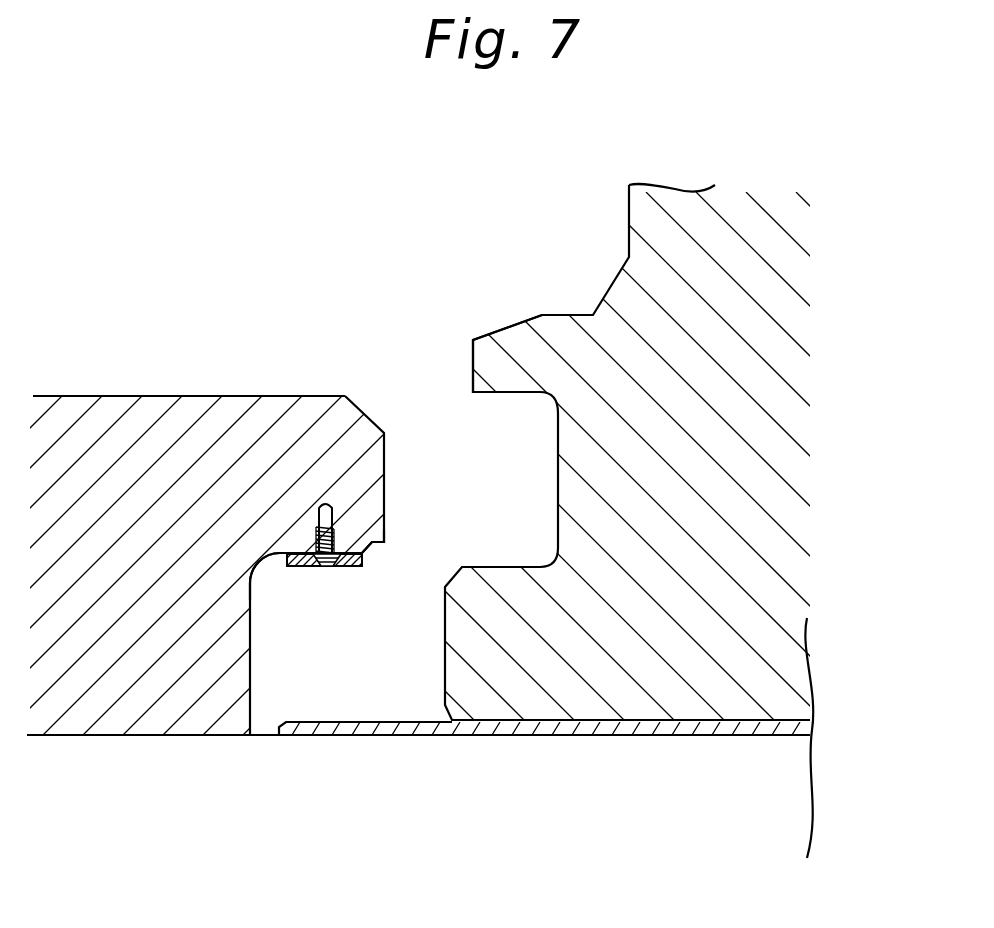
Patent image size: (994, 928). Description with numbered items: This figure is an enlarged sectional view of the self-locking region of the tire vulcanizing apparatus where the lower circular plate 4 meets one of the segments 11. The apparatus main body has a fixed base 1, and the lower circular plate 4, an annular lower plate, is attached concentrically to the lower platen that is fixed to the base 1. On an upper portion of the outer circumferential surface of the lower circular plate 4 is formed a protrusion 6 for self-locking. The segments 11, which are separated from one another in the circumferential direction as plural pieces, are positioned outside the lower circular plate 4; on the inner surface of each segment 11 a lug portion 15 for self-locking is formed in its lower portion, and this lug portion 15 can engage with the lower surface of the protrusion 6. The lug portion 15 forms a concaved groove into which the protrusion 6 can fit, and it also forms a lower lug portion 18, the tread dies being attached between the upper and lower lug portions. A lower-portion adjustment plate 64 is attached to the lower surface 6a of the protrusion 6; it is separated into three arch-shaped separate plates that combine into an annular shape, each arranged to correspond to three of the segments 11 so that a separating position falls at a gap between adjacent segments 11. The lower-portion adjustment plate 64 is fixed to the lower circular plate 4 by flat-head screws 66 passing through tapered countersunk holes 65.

The fixed base 1 is at (787, 788).
The lower circular plate 4 is at (131, 428).
The protrusion 6 is at (273, 425).
The lower surface 6a is at (273, 556).
The segment 11 is at (772, 428).
The lug portion 15 is at (482, 655).
The lower lug portion 18 is at (514, 349).
The lower-portion adjustment plate 64 is at (368, 543).
The tapered countersunk hole 65 is at (322, 567).
The flat-head screw 66 is at (350, 568).